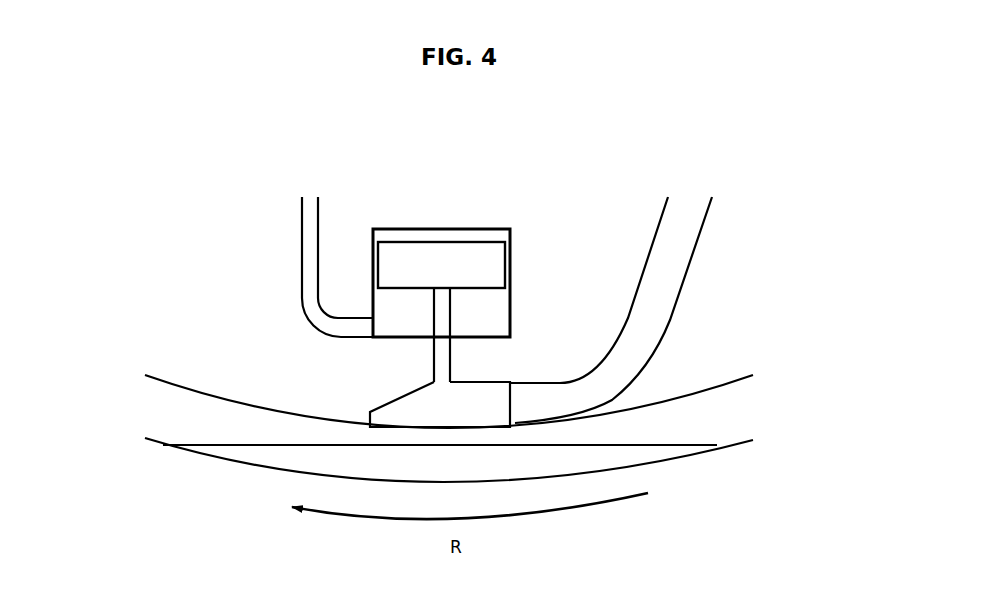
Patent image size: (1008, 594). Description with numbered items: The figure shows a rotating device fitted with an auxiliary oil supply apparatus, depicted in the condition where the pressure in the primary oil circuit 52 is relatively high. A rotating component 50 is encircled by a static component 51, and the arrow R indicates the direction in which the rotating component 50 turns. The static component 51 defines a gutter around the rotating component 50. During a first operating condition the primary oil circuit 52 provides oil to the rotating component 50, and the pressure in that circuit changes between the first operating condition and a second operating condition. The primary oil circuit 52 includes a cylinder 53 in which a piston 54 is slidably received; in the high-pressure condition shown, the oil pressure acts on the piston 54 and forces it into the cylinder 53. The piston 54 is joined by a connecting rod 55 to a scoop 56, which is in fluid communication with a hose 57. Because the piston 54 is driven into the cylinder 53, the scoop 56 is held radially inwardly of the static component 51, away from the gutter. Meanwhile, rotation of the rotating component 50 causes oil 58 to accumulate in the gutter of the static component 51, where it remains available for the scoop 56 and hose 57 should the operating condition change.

The rotating component 50 is at (365, 289).
The static component 51 is at (720, 416).
The primary oil circuit 52 is at (314, 295).
The cylinder 53 is at (423, 228).
The piston 54 is at (463, 256).
The connecting rod 55 is at (453, 355).
The scoop 56 is at (374, 416).
The hose 57 is at (625, 373).
The oil 58 is at (620, 459).